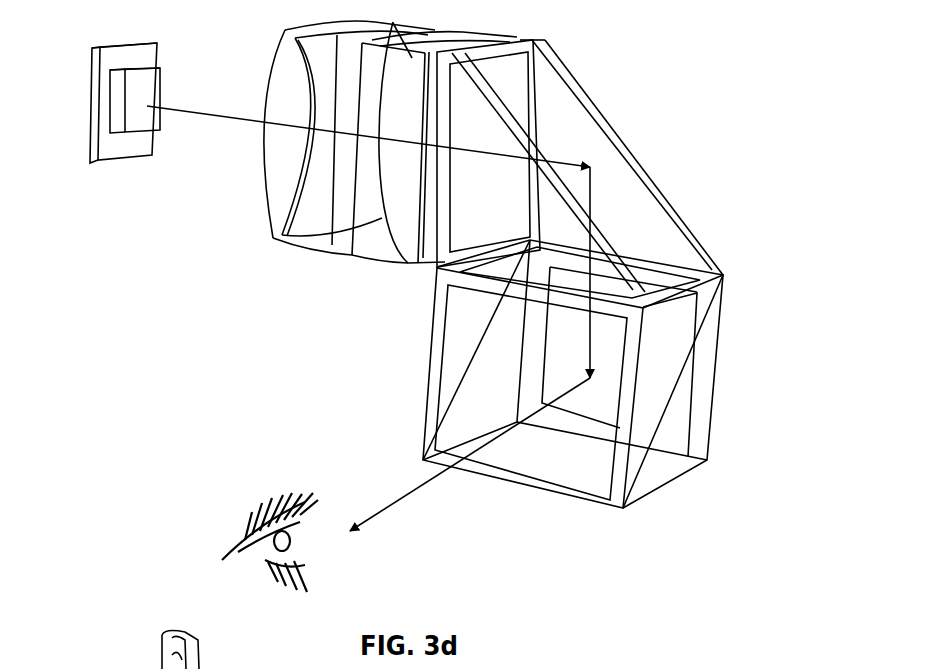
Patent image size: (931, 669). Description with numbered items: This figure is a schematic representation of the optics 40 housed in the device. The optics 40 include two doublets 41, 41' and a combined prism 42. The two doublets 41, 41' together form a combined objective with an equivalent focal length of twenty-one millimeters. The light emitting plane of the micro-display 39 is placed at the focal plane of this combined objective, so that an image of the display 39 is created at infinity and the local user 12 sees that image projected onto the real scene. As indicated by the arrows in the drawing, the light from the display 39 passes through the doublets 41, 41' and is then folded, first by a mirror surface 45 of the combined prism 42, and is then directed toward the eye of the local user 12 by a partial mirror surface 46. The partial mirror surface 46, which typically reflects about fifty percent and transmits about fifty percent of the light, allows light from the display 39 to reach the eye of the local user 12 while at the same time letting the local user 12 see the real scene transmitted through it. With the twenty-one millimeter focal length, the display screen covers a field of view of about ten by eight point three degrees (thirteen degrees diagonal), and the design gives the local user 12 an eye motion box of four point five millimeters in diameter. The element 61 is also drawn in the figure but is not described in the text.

The micro-display 39 is at (125, 155).
The doublet 41 is at (328, 153).
The doublet 41' is at (410, 161).
The combined prism 42 is at (703, 243).
The mirror surface 45 is at (627, 175).
The optics 40 is at (513, 537).
The partial mirror surface 46 is at (667, 358).
The local user 12 is at (265, 560).
The sensor 61 is at (98, 668).